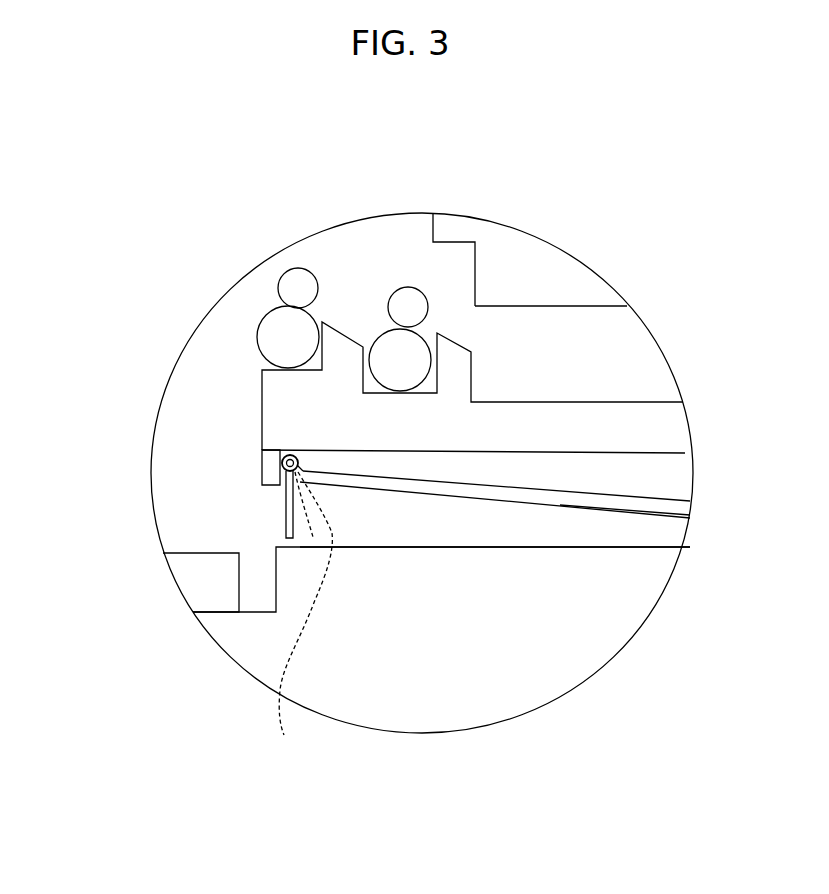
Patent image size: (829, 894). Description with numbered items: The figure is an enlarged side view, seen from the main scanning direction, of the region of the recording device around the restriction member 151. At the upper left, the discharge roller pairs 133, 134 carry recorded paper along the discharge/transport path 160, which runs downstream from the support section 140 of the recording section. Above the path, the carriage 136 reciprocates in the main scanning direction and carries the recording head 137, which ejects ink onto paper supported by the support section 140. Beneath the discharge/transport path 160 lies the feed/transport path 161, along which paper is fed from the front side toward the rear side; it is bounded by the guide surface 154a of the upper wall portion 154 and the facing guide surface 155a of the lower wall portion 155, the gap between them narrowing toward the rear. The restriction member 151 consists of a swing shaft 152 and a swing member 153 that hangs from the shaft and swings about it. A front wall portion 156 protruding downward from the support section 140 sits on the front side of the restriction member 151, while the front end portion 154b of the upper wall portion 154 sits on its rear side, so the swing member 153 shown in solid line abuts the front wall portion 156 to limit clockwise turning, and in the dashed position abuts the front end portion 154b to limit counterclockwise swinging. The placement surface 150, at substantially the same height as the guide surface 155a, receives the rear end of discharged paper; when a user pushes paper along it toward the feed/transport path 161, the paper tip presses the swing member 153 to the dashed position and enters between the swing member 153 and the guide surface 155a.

The discharge roller pair 133 is at (378, 325).
The discharge roller pair 134 is at (259, 297).
The carriage 136 is at (465, 224).
The recording head 137 is at (568, 283).
The support section 140 is at (562, 414).
The placement surface 150 is at (208, 553).
The restriction member 151 is at (184, 589).
The swing shaft 152 is at (288, 454).
The swing member 153 is at (285, 508).
The upper wall portion 154 is at (460, 497).
The guide surface 154a is at (547, 508).
The front end portion 154b is at (300, 466).
The lower wall portion 155 is at (303, 570).
The guide surface 155a is at (405, 542).
The front wall portion 156 is at (263, 457).
The discharge/transport path 160 is at (343, 293).
The feed/transport path 161 is at (491, 529).